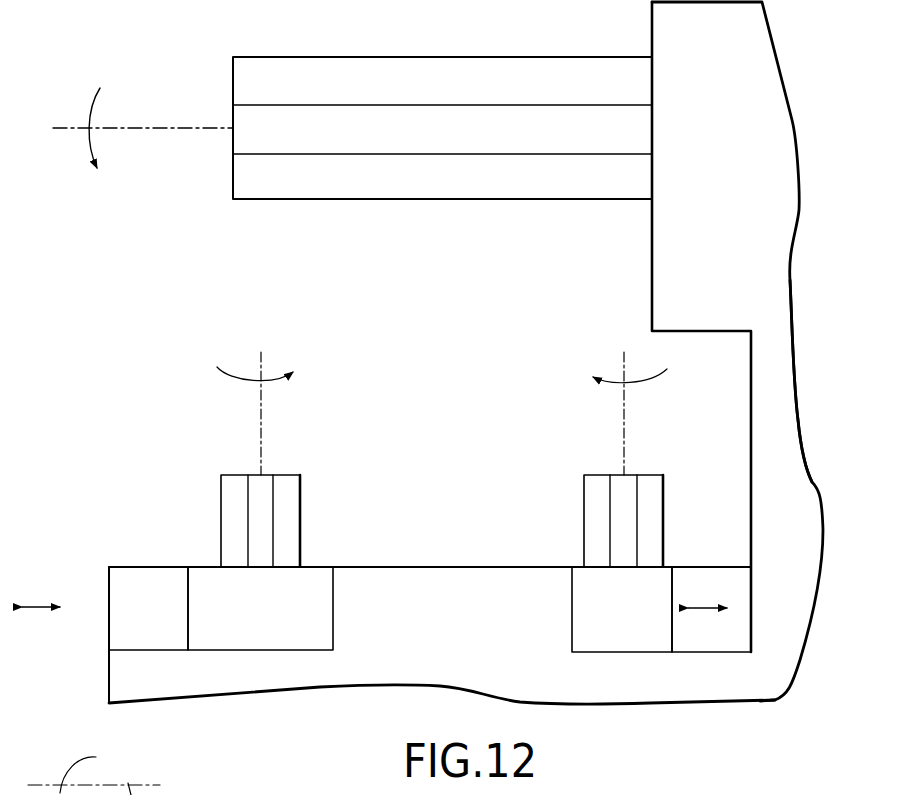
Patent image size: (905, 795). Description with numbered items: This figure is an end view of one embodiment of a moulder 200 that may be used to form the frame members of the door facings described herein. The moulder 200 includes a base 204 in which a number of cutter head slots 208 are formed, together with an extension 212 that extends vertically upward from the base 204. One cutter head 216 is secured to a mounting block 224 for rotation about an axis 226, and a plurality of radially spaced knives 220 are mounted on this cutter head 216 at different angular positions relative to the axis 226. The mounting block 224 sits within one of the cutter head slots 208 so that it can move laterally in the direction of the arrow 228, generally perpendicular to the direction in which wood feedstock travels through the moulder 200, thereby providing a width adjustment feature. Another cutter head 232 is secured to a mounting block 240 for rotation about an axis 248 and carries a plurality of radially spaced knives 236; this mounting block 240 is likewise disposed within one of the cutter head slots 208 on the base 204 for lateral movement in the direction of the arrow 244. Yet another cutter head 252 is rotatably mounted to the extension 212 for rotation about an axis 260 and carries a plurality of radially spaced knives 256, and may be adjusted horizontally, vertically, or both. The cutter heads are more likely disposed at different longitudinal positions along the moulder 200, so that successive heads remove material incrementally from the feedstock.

The moulder 200 is at (797, 145).
The base 204 is at (572, 687).
The cutter head slots 208 is at (133, 650).
The extension 212 is at (775, 287).
The cutter head 216 is at (300, 510).
The knives 220 is at (248, 494).
The mounting block 224 is at (282, 612).
The axis 226 is at (261, 428).
The arrow 228 is at (42, 605).
The cutter head 232 is at (663, 508).
The knives 236 is at (663, 480).
The mounting block 240 is at (642, 614).
The arrow 244 is at (710, 605).
The axis 248 is at (627, 427).
The cutter head 252 is at (413, 57).
The knives 256 is at (316, 104).
The axis 260 is at (168, 128).